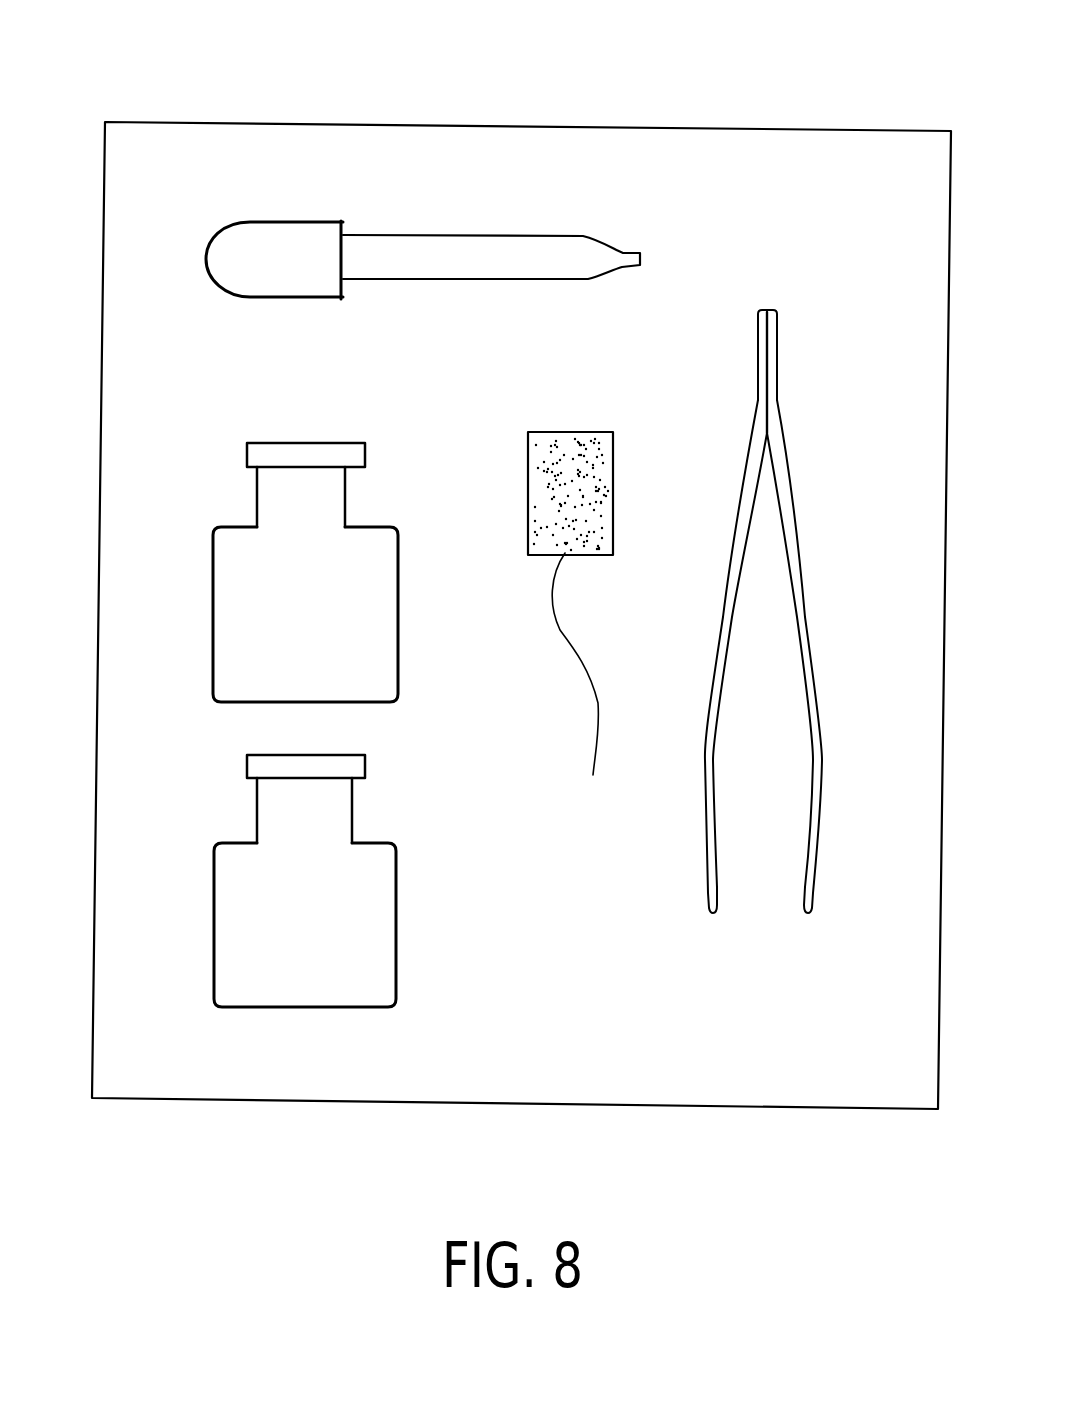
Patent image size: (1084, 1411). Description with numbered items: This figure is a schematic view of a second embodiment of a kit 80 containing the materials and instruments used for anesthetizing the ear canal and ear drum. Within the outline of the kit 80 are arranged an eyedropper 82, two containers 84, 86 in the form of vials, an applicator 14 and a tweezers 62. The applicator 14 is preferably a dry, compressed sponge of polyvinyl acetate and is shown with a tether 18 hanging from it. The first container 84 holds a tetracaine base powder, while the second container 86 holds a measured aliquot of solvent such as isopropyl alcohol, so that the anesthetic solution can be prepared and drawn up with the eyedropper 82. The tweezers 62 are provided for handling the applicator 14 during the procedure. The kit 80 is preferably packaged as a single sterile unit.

The kit 80 is at (190, 122).
The eyedropper 82 is at (388, 218).
The container 84 is at (388, 498).
The container 86 is at (403, 813).
The applicator 14 is at (590, 432).
The tether 18 is at (582, 667).
The tweezers 62 is at (797, 567).